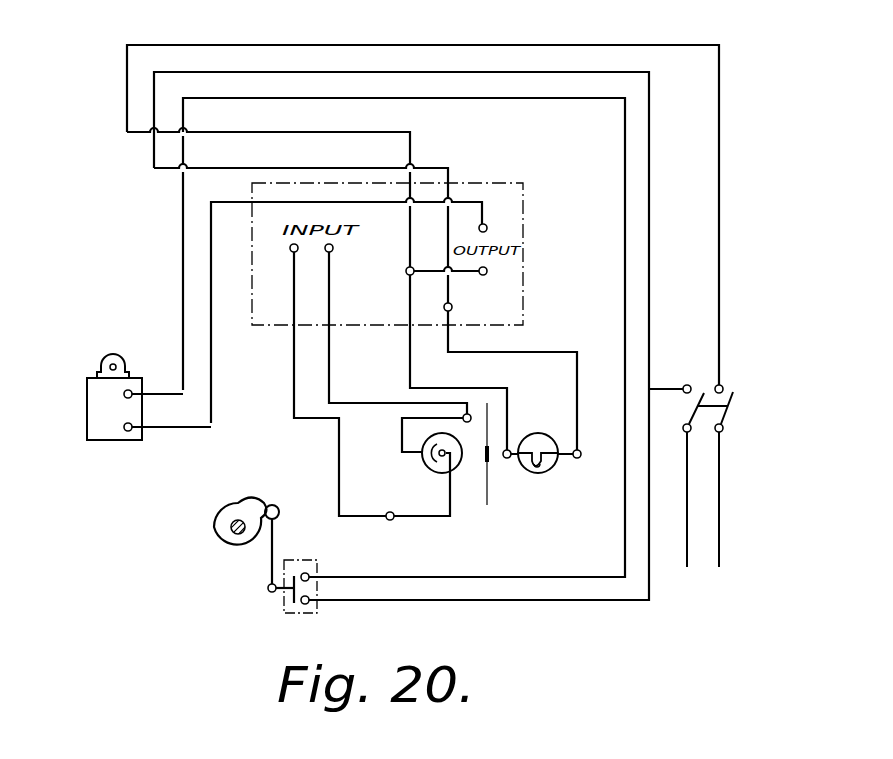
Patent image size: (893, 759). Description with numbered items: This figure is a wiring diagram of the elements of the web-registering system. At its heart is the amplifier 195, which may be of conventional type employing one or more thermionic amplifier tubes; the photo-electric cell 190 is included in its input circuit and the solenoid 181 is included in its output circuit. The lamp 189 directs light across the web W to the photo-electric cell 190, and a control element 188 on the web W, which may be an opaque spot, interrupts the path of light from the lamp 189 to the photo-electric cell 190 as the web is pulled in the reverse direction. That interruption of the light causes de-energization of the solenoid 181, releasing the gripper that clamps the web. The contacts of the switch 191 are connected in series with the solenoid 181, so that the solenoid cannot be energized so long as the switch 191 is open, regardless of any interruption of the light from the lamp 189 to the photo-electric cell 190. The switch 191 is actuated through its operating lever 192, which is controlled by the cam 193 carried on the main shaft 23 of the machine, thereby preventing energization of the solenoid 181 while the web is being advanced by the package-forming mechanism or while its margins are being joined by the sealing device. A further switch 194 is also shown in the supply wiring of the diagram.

The solenoid 181 is at (92, 415).
The control element 188 is at (489, 457).
The lamp 189 is at (557, 467).
The photo-electric cell 190 is at (428, 469).
The switch 191 is at (313, 567).
The operating lever 192 is at (267, 547).
The cam 193 is at (219, 518).
The main shaft 23 is at (237, 535).
The double pole switch 194 is at (685, 563).
The amplifier 195 is at (265, 325).
The web W is at (488, 497).